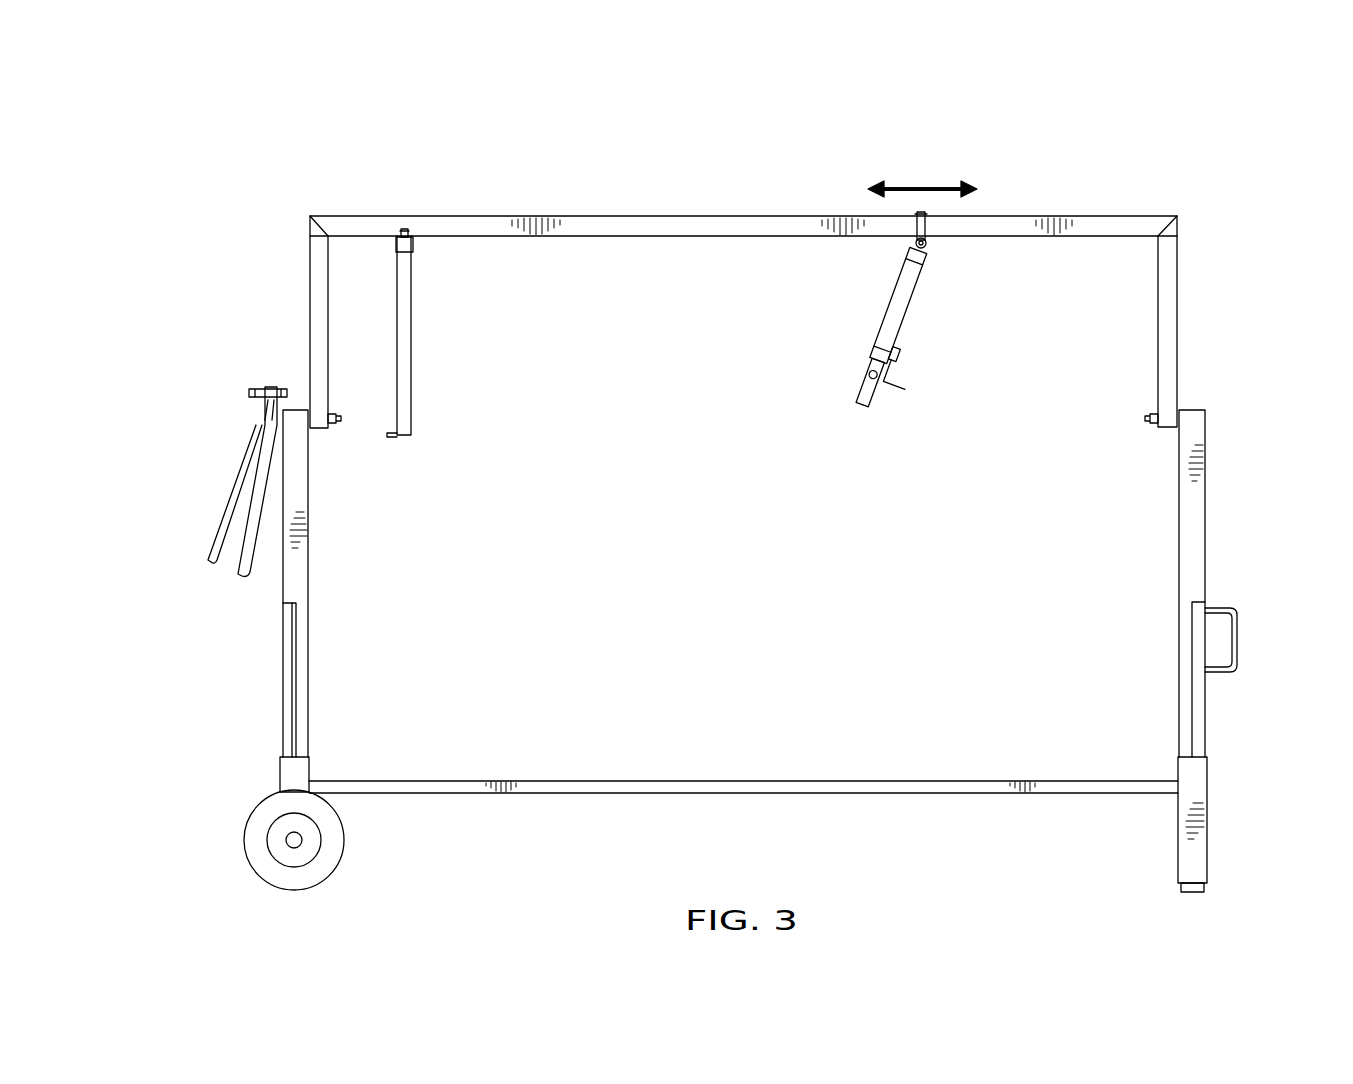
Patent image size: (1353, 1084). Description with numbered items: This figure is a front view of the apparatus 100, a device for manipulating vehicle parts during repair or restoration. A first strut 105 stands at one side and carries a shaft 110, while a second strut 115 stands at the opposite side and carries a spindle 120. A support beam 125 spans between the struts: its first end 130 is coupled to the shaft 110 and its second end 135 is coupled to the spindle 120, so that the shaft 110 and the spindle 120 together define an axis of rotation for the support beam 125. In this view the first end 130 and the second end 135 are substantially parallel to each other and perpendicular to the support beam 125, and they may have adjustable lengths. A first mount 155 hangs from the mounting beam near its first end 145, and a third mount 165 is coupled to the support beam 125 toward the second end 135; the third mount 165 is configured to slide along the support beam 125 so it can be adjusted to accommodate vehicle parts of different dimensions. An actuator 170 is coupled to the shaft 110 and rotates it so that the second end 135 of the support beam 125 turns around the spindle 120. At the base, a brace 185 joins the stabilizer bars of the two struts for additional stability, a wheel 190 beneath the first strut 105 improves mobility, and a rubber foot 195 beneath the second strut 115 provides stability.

The apparatus 100 is at (512, 113).
The first strut 105 is at (310, 690).
The shaft 110 is at (343, 425).
The second strut 115 is at (1206, 528).
The spindle 120 is at (1147, 418).
The support beam 125 is at (742, 215).
The first end 130 is at (309, 316).
The second end 135 is at (1180, 322).
The first end 145 is at (414, 246).
The first mount 155 is at (412, 333).
The third mount 165 is at (888, 308).
The actuator 170 is at (207, 427).
The brace 185 is at (918, 794).
The wheel 190 is at (244, 842).
The rubber foot 195 is at (1195, 893).